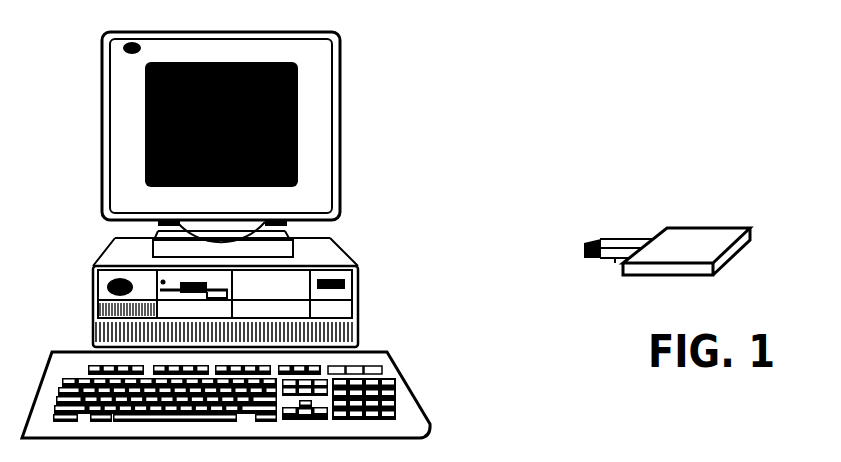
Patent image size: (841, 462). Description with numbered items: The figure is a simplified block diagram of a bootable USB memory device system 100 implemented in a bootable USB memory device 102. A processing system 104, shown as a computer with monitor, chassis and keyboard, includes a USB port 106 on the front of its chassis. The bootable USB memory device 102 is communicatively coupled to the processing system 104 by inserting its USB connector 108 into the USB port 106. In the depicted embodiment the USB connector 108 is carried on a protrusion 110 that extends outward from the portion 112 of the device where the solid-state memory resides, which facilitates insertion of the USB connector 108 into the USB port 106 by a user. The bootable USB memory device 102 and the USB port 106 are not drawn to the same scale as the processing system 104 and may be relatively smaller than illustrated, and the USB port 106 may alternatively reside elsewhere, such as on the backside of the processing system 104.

The bootable USB memory device system 100 is at (446, 137).
The bootable USB memory device 102 is at (639, 177).
The processing system 104 is at (92, 295).
The USB port 106 is at (345, 285).
The USB connector 108 is at (605, 240).
The protrusion 110 is at (613, 260).
The portion 112 is at (693, 243).